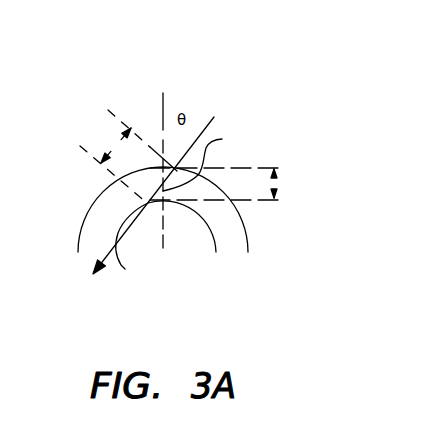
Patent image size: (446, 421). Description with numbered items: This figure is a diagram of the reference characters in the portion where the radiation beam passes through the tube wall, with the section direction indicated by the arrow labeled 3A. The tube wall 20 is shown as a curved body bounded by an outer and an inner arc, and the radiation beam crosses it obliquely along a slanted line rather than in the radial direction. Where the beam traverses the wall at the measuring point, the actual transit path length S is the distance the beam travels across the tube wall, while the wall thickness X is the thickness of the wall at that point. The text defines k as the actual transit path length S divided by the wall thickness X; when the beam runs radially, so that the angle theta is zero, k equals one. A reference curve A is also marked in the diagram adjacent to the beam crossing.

The curved body / cylindrical surface 20 is at (232, 243).
The section view direction arrow 3A is at (153, 199).
The reference curve A is at (198, 160).
The actual transit path length S is at (128, 156).
The wall thickness X is at (216, 184).